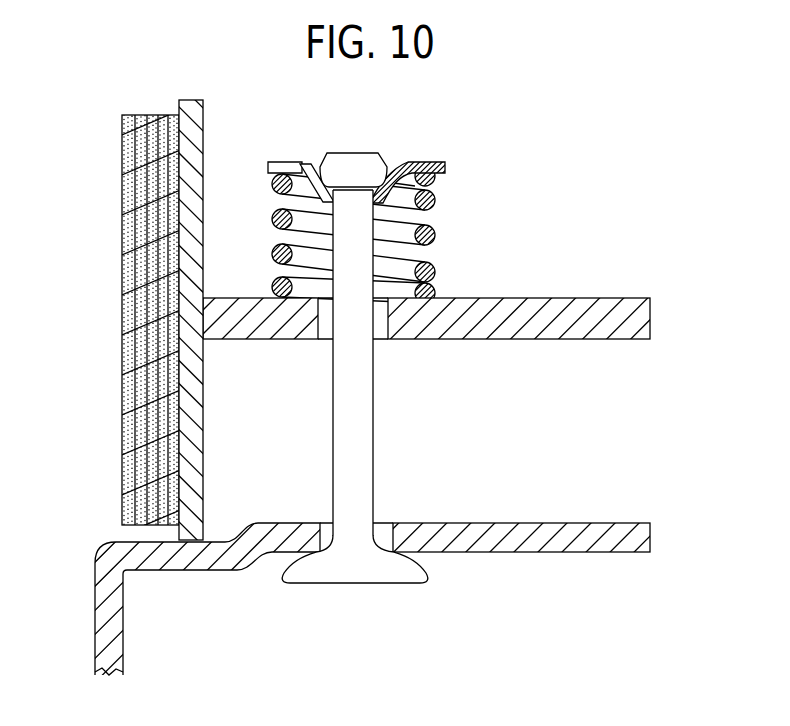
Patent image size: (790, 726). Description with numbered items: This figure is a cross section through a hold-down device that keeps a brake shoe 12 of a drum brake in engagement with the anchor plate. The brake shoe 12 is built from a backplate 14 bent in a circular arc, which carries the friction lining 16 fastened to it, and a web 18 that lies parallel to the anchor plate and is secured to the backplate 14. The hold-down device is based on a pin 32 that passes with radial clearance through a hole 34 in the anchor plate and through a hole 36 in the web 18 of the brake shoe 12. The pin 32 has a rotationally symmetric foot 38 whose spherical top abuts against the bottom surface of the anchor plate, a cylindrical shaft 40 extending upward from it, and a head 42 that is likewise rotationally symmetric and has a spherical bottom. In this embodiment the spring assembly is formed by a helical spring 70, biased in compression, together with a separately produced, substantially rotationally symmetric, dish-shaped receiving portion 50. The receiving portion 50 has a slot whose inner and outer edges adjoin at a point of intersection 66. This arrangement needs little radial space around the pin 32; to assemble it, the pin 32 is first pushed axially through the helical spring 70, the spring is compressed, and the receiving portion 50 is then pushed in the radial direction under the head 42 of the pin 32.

The brake shoe 12 is at (255, 363).
The backplate 14 is at (186, 437).
The friction lining 16 is at (142, 437).
The web 18 is at (592, 318).
The pin 32 is at (368, 367).
The hole 34 is at (386, 532).
The hole 36 is at (326, 339).
The foot 38 is at (379, 565).
The cylindrical shaft 40 is at (350, 447).
The head 42 is at (357, 172).
The receiving portion 50 is at (420, 150).
The point of intersection 66 is at (303, 162).
The helical spring 70 is at (437, 233).